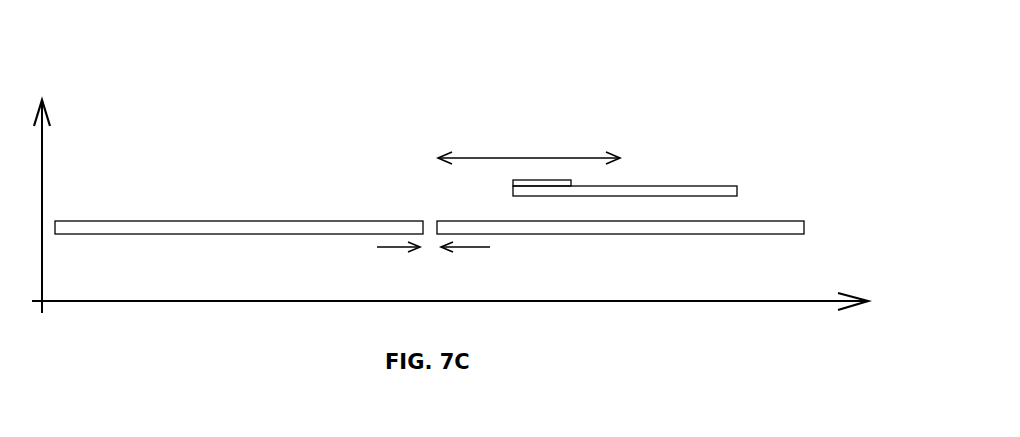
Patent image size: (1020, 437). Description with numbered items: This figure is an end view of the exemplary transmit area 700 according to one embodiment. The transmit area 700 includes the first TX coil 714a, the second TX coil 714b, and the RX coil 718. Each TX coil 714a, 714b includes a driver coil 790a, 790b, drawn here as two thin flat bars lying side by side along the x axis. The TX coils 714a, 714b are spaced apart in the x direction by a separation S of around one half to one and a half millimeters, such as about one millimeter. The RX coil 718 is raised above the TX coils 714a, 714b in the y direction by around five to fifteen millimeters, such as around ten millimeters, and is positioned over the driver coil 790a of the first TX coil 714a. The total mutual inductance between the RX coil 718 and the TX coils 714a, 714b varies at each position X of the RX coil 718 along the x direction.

The transmit area 700 is at (450, 162).
The first TX coil 714a is at (647, 188).
The second TX coil 714b is at (239, 188).
The RX coil 718 is at (717, 185).
The driver coil 790a is at (793, 221).
The driver coil 790b is at (92, 221).